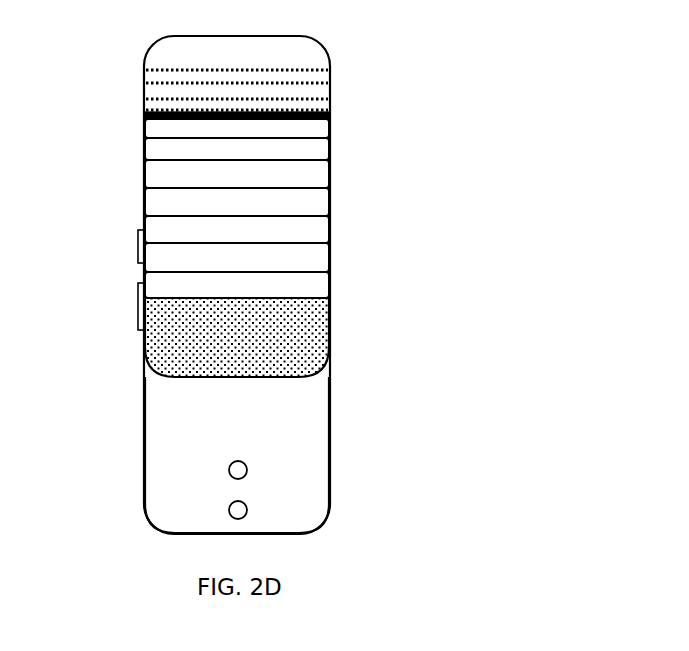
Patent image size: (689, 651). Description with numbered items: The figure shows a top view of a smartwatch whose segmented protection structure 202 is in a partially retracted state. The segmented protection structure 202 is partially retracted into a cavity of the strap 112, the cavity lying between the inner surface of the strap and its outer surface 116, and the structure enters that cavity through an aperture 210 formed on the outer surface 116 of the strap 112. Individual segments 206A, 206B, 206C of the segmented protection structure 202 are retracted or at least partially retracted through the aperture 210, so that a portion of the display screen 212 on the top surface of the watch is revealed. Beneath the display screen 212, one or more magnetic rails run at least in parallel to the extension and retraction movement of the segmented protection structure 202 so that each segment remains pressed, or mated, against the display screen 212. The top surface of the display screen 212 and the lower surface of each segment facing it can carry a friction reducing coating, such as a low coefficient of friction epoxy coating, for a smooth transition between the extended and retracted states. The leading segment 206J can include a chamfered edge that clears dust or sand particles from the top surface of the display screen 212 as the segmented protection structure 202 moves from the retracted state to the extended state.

The strap 112 is at (331, 410).
The outer surface 116 is at (307, 435).
The segmented protection structure 202 is at (330, 250).
The segment 206A is at (328, 72).
The segment 206B is at (328, 92).
The segment 206C is at (328, 107).
The leading segment 206J is at (163, 285).
The aperture 210 is at (145, 116).
The display screen 212 is at (285, 325).